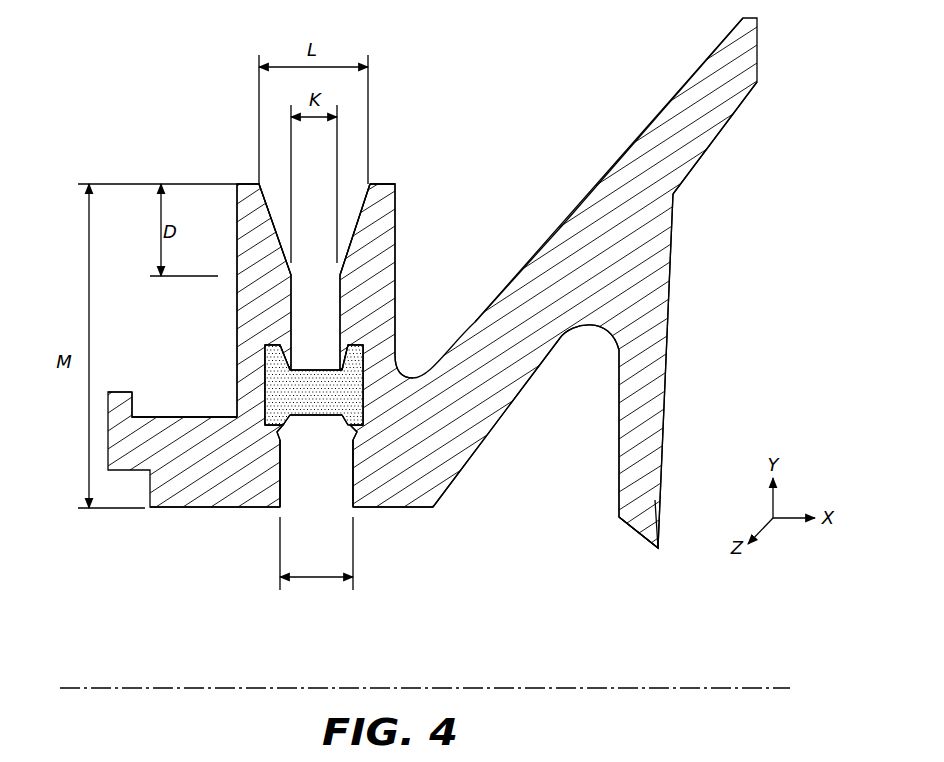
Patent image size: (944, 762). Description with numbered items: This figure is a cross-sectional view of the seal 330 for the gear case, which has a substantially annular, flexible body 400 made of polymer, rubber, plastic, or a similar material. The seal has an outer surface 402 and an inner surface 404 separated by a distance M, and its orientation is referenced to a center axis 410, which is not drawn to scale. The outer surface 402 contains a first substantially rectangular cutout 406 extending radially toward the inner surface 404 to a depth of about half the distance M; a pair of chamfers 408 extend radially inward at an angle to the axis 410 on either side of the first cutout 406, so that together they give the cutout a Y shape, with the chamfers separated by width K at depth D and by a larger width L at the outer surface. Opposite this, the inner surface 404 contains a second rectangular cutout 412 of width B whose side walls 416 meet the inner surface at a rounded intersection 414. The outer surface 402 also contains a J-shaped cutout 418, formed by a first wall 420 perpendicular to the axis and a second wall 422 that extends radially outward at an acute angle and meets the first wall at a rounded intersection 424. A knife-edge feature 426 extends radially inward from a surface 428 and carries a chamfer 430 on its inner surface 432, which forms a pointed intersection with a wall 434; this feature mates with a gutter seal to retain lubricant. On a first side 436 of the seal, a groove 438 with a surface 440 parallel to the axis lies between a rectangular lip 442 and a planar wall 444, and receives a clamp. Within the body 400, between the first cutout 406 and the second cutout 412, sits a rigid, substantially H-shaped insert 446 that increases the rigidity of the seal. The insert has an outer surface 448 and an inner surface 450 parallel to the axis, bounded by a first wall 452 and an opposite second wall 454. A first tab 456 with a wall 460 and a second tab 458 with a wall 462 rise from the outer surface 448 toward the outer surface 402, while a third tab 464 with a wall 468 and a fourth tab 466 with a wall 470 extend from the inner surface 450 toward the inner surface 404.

The seal 330 is at (100, 47).
The body 400 is at (746, 50).
The outer surface 402 is at (242, 40).
The inner surface 404 is at (284, 600).
The first cutout 406 is at (311, 193).
The chamfers 408 is at (270, 196).
The center axis 410 is at (738, 686).
The second cutout 412 is at (335, 516).
The intersection 414 is at (280, 515).
The side walls 416 is at (279, 472).
The J-shaped cutout 418 is at (503, 156).
The first wall 420 is at (397, 230).
The second wall 422 is at (688, 82).
The intersection 424 is at (414, 377).
The knife-edge feature 426 is at (680, 422).
The surface 428 is at (719, 134).
The chamfer 430 is at (633, 535).
The inner surface 432 is at (641, 560).
The wall 434 is at (668, 340).
The first side 436 is at (140, 290).
The groove 438 is at (150, 362).
The surface 440 is at (172, 417).
The lip 442 is at (120, 393).
The wall 444 is at (237, 212).
The insert 446 is at (278, 395).
The outer surface 448 is at (318, 368).
The inner surface 450 is at (318, 420).
The first wall 452 is at (265, 360).
The second wall 454 is at (366, 398).
The first tab 456 is at (270, 346).
The second tab 458 is at (349, 352).
The wall 460 is at (290, 343).
The wall 462 is at (347, 345).
The third tab 464 is at (272, 430).
The fourth tab 466 is at (356, 445).
The wall 468 is at (278, 415).
The wall 470 is at (353, 470).